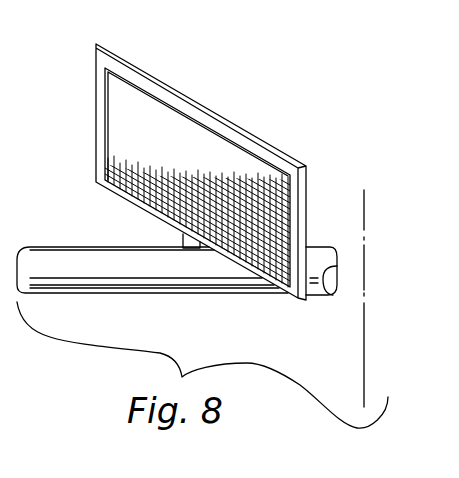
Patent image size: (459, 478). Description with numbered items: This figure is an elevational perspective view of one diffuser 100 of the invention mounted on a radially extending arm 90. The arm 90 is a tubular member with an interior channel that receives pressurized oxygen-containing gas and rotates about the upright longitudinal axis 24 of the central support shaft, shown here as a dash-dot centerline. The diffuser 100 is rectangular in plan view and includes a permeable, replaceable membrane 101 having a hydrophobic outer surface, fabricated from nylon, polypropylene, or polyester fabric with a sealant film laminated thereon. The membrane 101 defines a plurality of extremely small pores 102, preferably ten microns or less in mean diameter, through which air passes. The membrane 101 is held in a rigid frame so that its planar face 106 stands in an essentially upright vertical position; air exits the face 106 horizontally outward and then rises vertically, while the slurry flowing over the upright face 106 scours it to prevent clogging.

The longitudinal axis 24 is at (364, 210).
The radially extending arm 90 is at (96, 268).
The diffuser 100 is at (213, 108).
The membrane 101 is at (162, 117).
The pores 102 is at (237, 168).
The planar face 106 is at (118, 158).